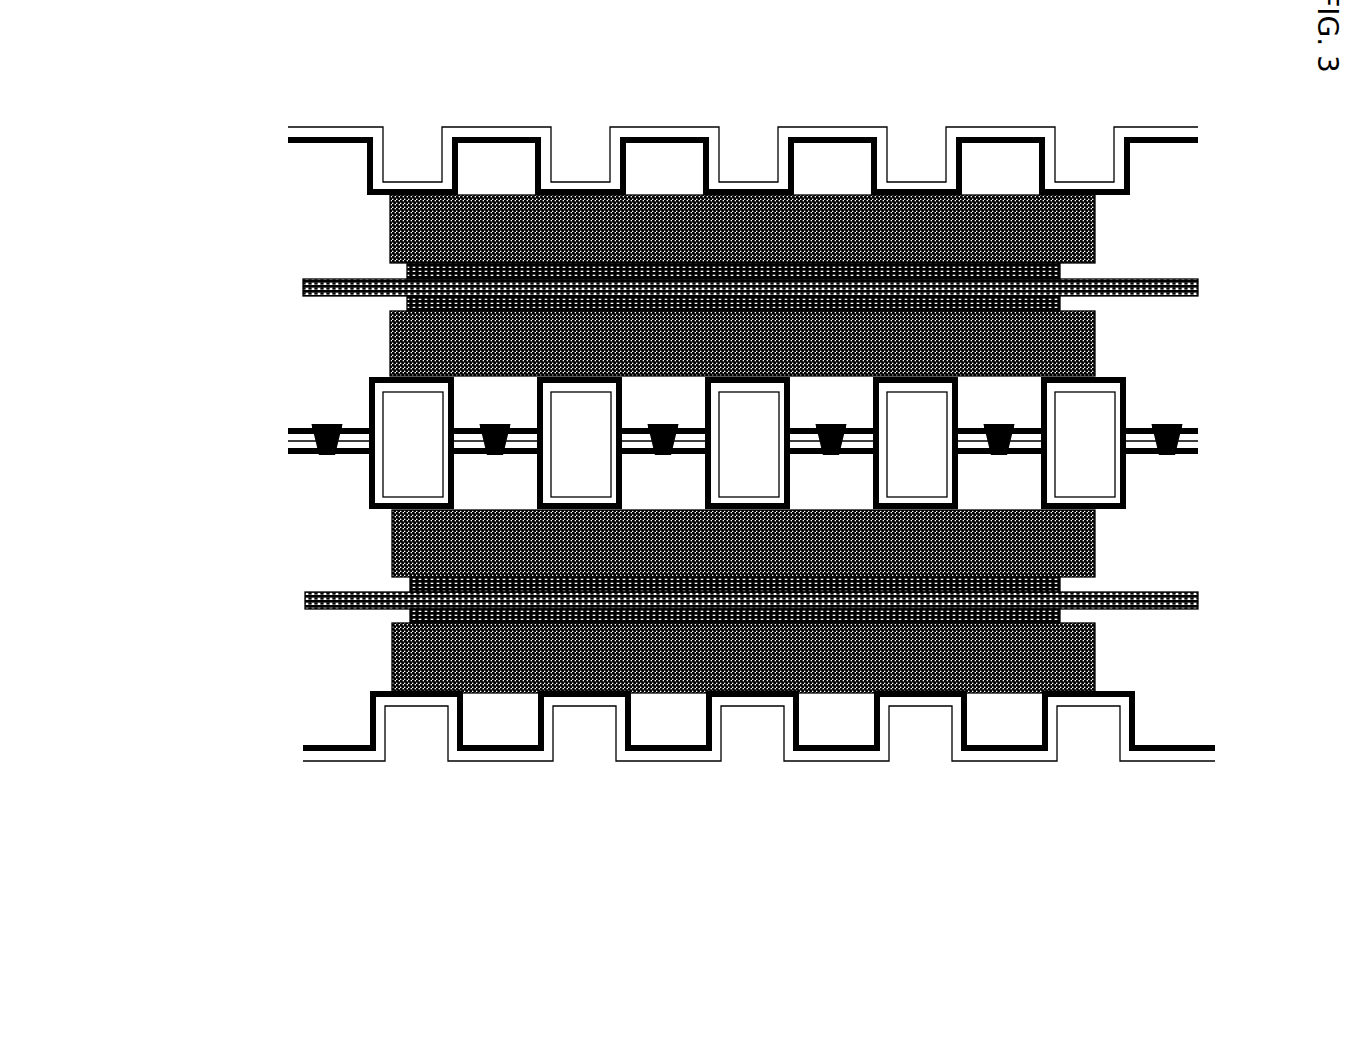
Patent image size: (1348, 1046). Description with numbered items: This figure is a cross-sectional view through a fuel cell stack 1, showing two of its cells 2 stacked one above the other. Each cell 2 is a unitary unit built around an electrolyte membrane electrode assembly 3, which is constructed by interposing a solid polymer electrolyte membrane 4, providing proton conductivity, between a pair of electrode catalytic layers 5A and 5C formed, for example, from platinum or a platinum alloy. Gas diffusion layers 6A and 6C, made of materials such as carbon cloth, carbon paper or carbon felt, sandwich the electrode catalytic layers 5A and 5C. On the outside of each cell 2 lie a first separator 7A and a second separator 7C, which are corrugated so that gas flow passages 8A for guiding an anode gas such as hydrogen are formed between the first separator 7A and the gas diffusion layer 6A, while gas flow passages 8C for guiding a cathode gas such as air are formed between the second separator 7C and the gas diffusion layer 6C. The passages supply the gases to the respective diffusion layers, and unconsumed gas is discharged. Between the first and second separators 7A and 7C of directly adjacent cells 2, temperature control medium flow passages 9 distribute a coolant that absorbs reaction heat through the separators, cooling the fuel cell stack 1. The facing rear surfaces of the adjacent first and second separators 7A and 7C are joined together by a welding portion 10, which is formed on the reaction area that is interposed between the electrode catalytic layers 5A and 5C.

The fuel cell stack 1 is at (1112, 112).
The cell 2 is at (123, 148).
The electrolyte membrane electrode assembly 3 is at (202, 192).
The electrolyte membrane 4 is at (303, 290).
The electrode catalytic layer 5A is at (407, 304).
The electrode catalytic layer 5C is at (407, 270).
The gas diffusion layer 6A is at (390, 345).
The gas diffusion layer 6C is at (390, 216).
The first separator 7A is at (296, 431).
The second separator 7C is at (290, 141).
The gas flow passages 8A is at (1023, 408).
The gas flow passages 8C is at (1000, 163).
The temperature control medium flow passages 9 is at (1097, 423).
The welding portion 10 is at (320, 426).